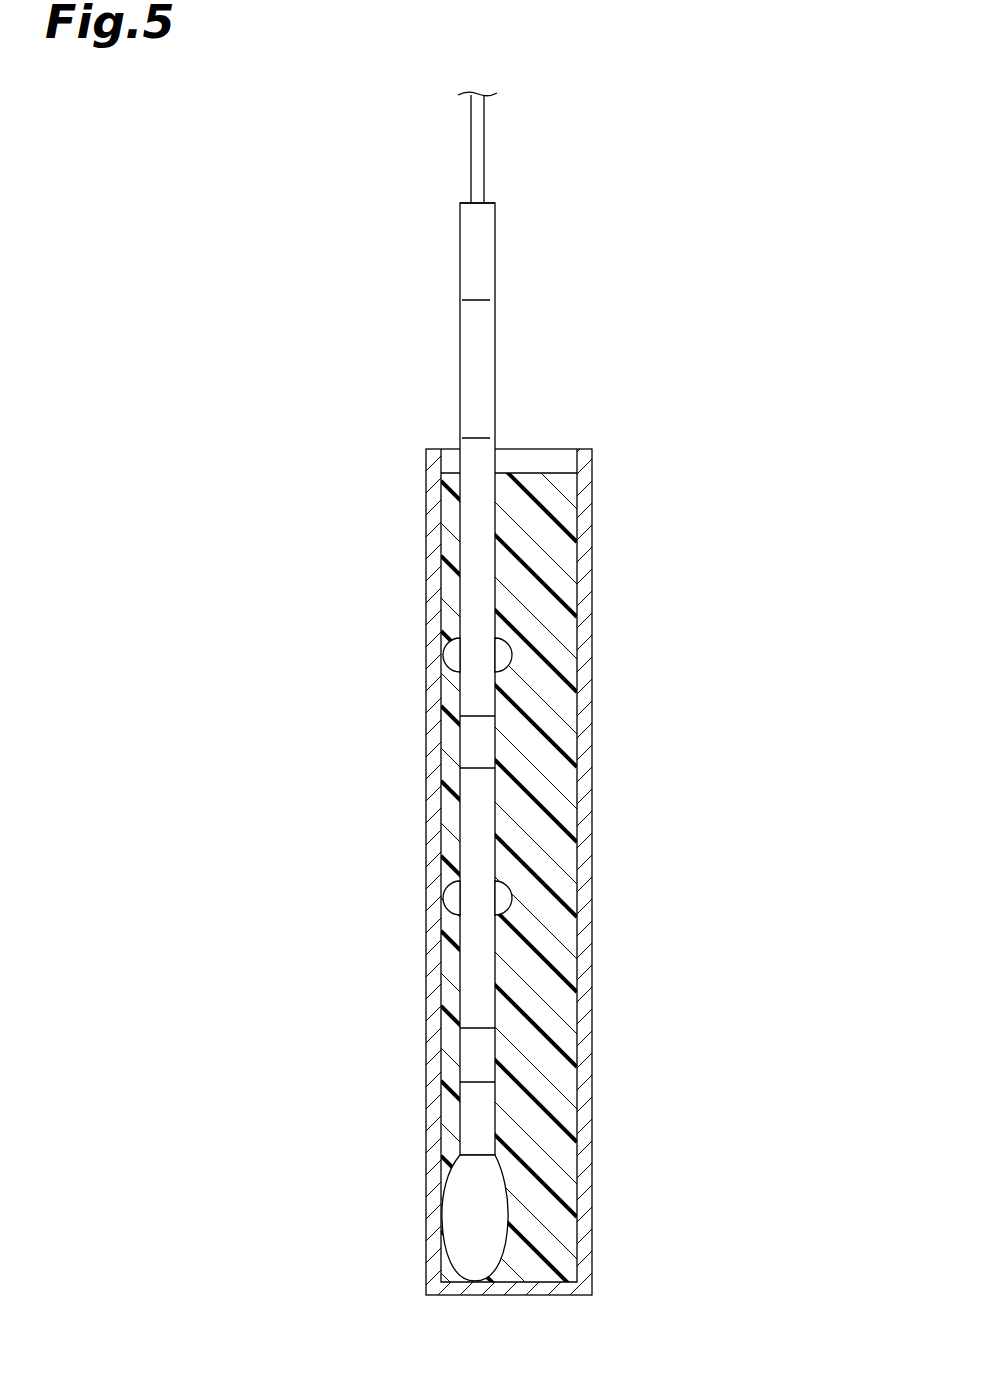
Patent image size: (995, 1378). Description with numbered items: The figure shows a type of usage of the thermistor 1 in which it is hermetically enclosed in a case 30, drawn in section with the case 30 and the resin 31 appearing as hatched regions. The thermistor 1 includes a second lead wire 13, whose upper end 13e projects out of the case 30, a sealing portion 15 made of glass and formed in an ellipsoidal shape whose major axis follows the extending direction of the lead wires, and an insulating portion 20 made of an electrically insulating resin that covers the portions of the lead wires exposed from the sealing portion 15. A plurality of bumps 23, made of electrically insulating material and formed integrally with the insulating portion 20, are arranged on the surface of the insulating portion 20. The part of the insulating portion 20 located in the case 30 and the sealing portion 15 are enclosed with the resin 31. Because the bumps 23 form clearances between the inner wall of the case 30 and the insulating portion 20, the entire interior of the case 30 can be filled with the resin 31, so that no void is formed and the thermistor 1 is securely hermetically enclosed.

The thermistor 1 is at (514, 314).
The second lead wire 13 is at (494, 150).
The wire end 13e is at (471, 124).
The sealing portion 15 is at (510, 1193).
The insulating portion 20 is at (507, 838).
The bumps 23 is at (446, 671).
The case 30 is at (592, 548).
The resin 31 is at (544, 463).